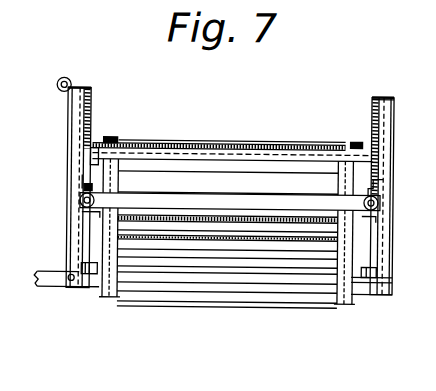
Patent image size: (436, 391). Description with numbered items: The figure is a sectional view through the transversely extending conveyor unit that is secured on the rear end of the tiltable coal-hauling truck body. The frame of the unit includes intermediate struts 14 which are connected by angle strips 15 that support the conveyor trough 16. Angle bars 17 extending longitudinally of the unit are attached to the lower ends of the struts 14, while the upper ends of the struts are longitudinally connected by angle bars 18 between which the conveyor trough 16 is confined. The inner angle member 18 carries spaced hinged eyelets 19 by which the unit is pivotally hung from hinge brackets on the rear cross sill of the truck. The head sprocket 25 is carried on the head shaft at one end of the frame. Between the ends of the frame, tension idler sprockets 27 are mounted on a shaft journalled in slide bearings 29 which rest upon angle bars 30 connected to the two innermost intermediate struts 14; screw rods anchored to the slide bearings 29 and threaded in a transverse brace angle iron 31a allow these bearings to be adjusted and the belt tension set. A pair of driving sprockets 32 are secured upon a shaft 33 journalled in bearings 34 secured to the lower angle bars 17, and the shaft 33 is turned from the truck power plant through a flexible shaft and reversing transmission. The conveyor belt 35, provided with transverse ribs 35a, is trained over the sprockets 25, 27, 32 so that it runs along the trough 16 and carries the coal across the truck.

The intermediate struts 14 is at (68, 117).
The angle strips 15 is at (88, 150).
The conveyor trough 16 is at (372, 97).
The angle bars 17 is at (88, 284).
The angle bars 18 is at (88, 88).
The hinged eyelets 19 is at (66, 80).
The head sprocket 25 is at (105, 143).
The tension idler sprockets 27 is at (78, 172).
The slide bearings 29 is at (82, 215).
The angle bars 30 is at (82, 186).
The transverse brace angle iron 31a is at (125, 193).
The driving sprockets 32 is at (112, 298).
The shaft 33 is at (210, 268).
The bearings 34 is at (82, 268).
The conveyor belt 35 is at (175, 168).
The transverse ribs 35a is at (230, 143).